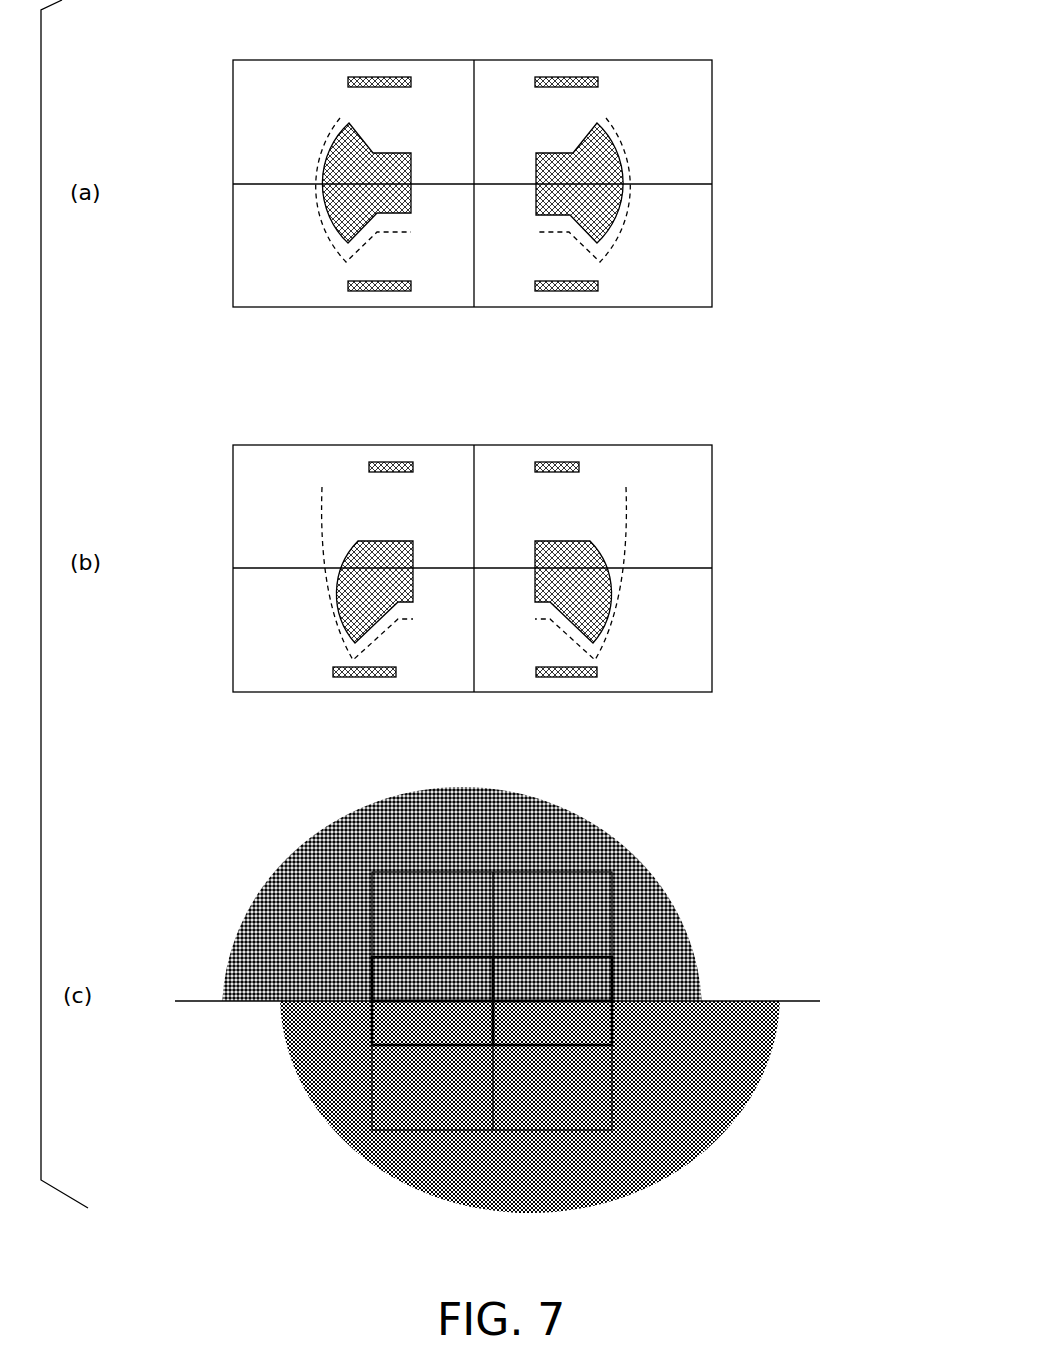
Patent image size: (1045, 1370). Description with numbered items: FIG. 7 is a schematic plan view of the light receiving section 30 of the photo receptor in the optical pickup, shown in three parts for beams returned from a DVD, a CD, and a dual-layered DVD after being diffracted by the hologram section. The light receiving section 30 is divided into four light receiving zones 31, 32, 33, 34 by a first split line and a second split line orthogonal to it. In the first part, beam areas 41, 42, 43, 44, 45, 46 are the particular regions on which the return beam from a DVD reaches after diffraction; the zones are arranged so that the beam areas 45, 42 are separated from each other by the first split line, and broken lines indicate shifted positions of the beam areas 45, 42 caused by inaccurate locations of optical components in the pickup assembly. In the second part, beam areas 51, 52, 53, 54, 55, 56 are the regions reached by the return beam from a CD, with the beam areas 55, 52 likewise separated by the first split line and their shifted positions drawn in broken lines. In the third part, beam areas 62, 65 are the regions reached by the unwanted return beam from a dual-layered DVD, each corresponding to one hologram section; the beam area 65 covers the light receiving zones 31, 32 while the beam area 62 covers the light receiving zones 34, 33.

The light receiving section 30 is at (704, 50).
The light receiving zone 31 is at (233, 120).
The light receiving zone 32 is at (712, 118).
The light receiving zone 33 is at (712, 246).
The light receiving zone 34 is at (233, 246).
The beam area 41 is at (573, 291).
The beam area 42 is at (615, 128).
The beam area 43 is at (568, 77).
The beam area 44 is at (392, 77).
The beam area 45 is at (333, 128).
The beam area 46 is at (376, 291).
The beam area 51 is at (570, 677).
The beam area 52 is at (593, 541).
The beam area 53 is at (558, 462).
The beam area 54 is at (387, 462).
The beam area 55 is at (353, 541).
The beam area 56 is at (362, 677).
The beam area 62 is at (690, 1145).
The beam area 65 is at (300, 850).